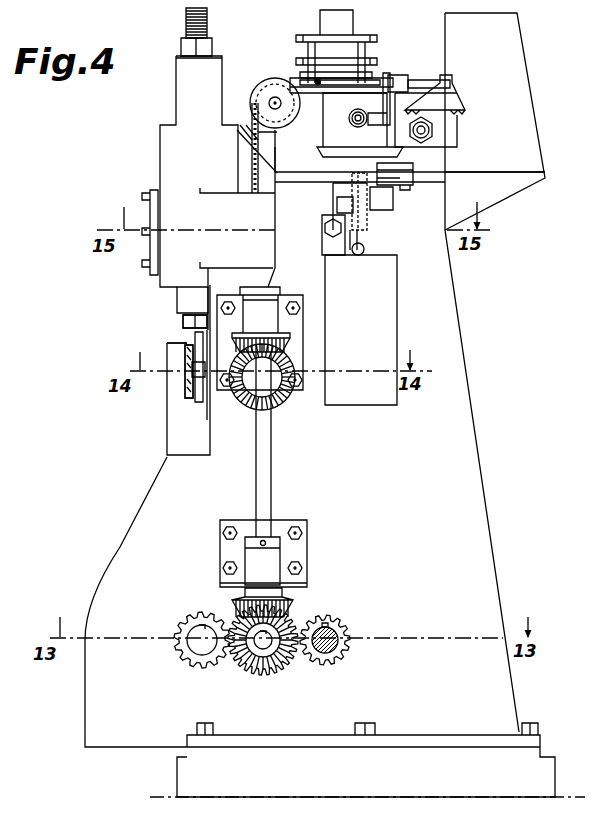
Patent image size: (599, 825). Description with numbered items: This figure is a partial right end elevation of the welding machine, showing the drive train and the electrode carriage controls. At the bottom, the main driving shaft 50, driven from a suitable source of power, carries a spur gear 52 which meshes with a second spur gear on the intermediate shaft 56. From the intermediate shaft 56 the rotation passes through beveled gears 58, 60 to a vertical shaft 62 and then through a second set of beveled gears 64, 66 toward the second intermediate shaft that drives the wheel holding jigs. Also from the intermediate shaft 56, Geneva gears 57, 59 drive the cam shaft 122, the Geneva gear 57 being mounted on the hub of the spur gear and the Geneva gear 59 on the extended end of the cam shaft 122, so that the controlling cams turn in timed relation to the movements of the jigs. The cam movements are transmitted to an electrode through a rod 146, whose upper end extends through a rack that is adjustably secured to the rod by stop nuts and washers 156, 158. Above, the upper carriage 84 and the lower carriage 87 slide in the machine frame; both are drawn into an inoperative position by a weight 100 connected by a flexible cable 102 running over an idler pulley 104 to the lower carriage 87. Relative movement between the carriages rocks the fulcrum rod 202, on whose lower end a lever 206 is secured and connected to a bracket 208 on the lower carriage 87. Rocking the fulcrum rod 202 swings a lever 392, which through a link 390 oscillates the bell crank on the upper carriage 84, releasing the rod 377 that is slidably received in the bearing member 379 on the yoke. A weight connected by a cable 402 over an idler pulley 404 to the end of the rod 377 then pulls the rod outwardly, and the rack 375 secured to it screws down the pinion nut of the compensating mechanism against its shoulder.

The stop nut and washer 158 is at (190, 52).
The idler pulley 404 is at (276, 77).
The cable 402 is at (250, 127).
The lever 392 is at (361, 82).
The link 390 is at (333, 79).
The bearing member 379 is at (398, 74).
The rod 377 is at (426, 81).
The rack 375 is at (456, 108).
The upper carriage 84 is at (324, 136).
The fulcrum rod 202 is at (376, 150).
The lever 206 is at (388, 165).
The bracket 208 is at (396, 188).
The lower carriage 87 is at (342, 184).
The idler pulley 104 is at (372, 226).
The flexible cable 102 is at (372, 246).
The weight 100 is at (390, 405).
The stop nut and washer 156 is at (183, 318).
The rod 146 is at (186, 338).
The beveled gear 64 is at (289, 341).
The beveled gear 66 is at (246, 401).
The vertical shaft 62 is at (261, 483).
The beveled gear 60 is at (293, 600).
The Geneva gear 59 is at (197, 612).
The cam shaft 122 is at (200, 649).
The beveled gear 58 is at (253, 654).
The intermediate shaft 56 is at (268, 644).
The Geneva gear 57 is at (262, 676).
The spur gear 52 is at (351, 624).
The main driving shaft 50 is at (334, 651).